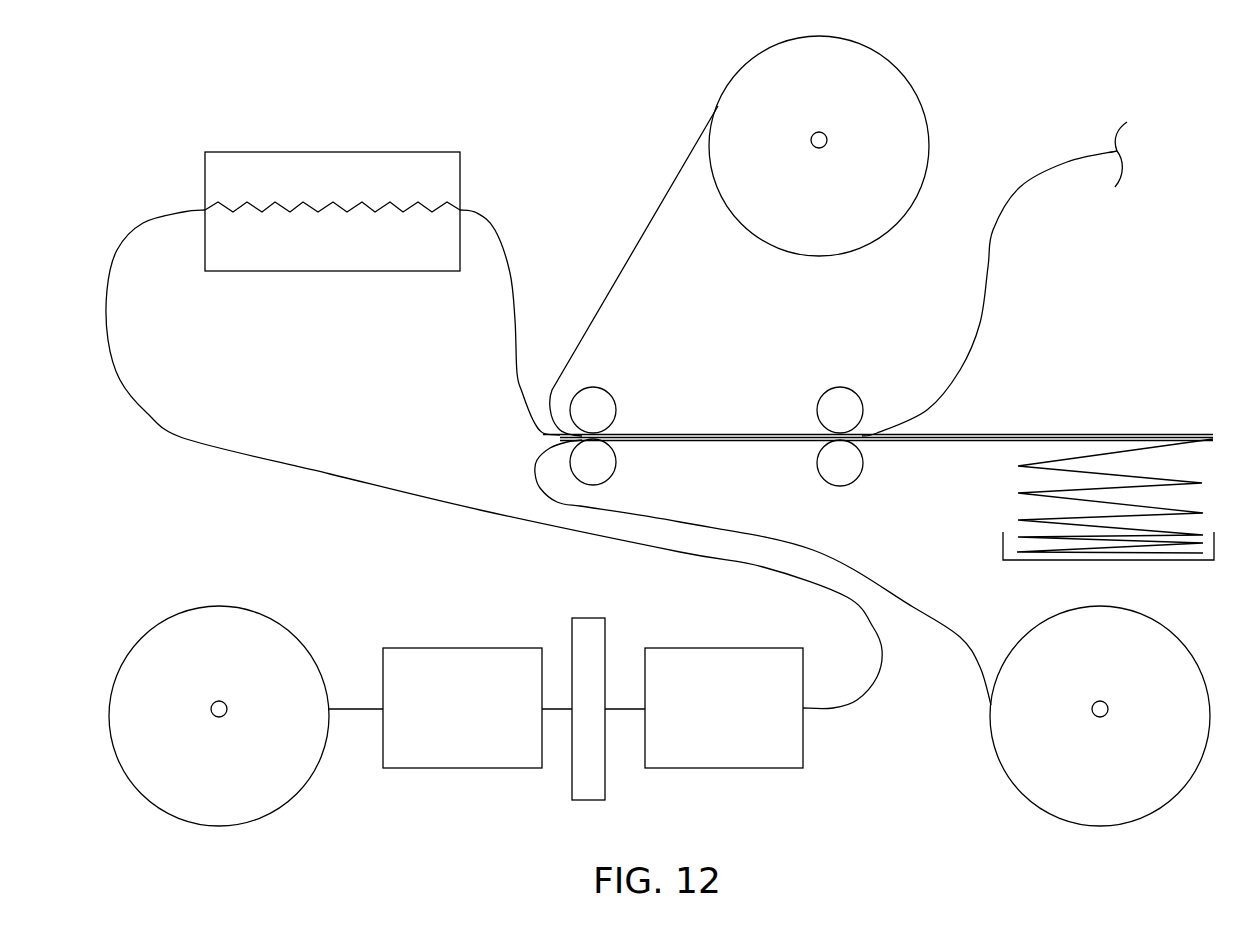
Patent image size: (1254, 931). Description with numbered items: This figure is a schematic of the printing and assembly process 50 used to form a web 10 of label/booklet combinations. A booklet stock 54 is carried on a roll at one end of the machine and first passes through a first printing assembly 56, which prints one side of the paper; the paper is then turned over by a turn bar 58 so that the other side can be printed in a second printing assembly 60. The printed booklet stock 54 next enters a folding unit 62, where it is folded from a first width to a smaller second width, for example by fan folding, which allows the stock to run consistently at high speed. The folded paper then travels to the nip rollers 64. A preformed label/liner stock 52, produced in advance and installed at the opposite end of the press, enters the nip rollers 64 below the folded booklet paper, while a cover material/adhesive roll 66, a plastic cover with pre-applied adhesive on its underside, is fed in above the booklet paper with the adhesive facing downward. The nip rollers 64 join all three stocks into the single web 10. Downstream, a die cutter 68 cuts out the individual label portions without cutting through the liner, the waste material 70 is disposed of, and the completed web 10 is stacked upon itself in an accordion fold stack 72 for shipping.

The printing and assembly process 50 is at (584, 76).
The web 10 is at (1033, 439).
The label/liner stock 52 is at (1055, 798).
The booklet stock 54 is at (217, 808).
The first printing assembly 56 is at (471, 714).
The turn bar 58 is at (603, 690).
The second printing assembly 60 is at (736, 714).
The folding unit 62 is at (281, 189).
The nip rollers 64 is at (607, 458).
The cover material/adhesive roll 66 is at (898, 104).
The die cutter 68 is at (845, 398).
The waste material 70 is at (1066, 162).
The stack 72 is at (1123, 527).